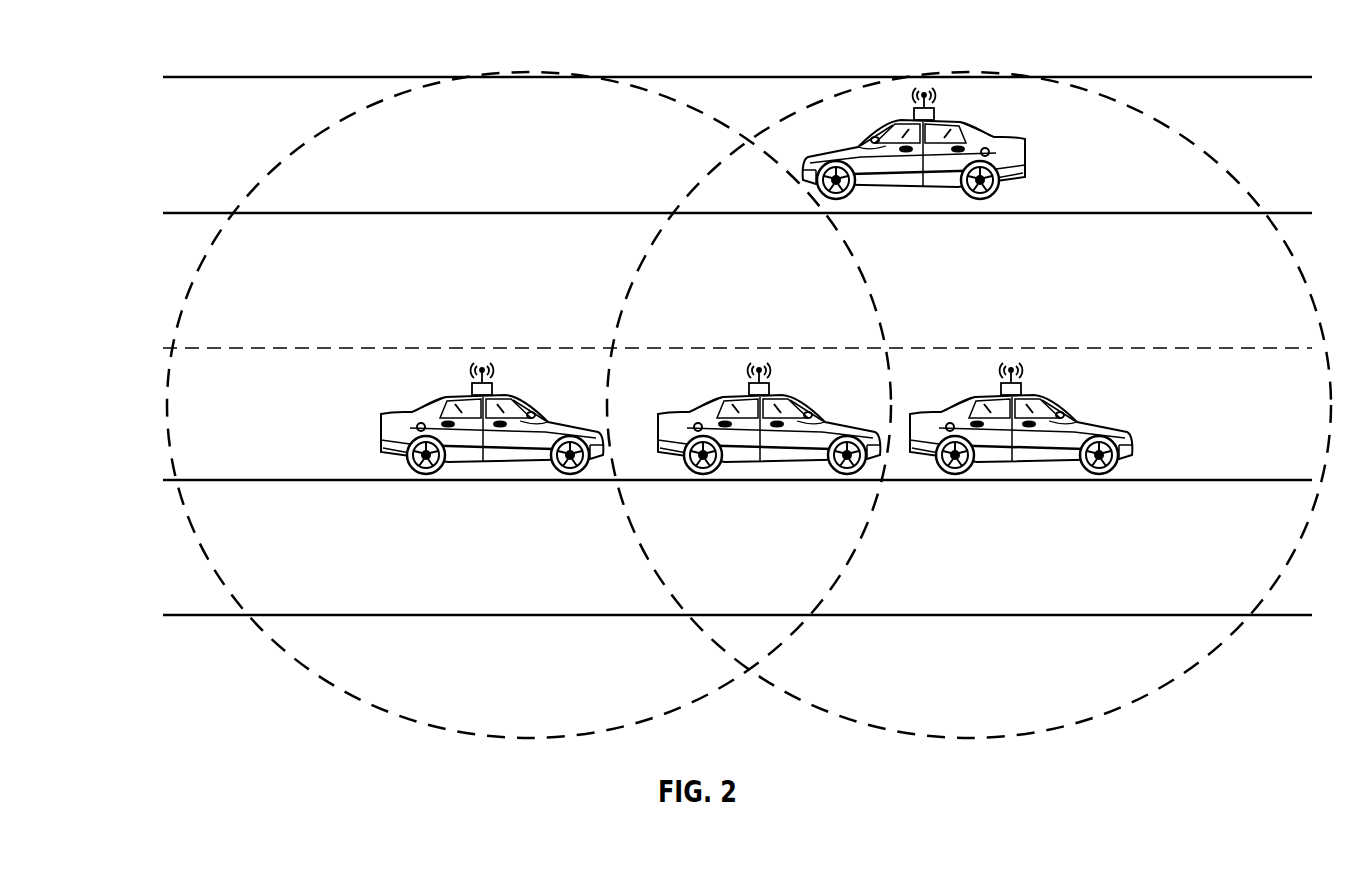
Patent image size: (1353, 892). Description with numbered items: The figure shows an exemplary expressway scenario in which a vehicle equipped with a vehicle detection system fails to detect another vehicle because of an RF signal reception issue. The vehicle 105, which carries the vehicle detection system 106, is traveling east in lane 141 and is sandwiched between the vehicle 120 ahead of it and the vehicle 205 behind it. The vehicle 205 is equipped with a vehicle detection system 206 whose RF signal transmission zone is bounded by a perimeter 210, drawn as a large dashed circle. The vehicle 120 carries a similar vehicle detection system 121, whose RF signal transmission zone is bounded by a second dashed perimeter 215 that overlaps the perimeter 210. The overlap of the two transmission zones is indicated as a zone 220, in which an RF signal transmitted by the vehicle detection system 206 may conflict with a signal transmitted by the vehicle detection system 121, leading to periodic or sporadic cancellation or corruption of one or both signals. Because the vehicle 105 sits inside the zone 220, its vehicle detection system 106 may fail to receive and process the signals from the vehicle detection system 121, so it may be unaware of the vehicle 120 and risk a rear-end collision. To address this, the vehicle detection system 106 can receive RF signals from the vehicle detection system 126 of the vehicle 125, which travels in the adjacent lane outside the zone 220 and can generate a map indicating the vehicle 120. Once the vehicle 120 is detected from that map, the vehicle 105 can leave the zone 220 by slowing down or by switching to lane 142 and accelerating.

The vehicle 105 is at (693, 396).
The vehicle detection system 106 is at (770, 386).
The vehicle 120 is at (1067, 403).
The vehicle detection system 121 is at (1014, 384).
The vehicle 125 is at (1015, 130).
The vehicle detection system 126 is at (946, 110).
The lane 141 is at (157, 426).
The lane 142 is at (188, 577).
The vehicle 205 is at (416, 396).
The vehicle detection system 206 is at (493, 386).
The perimeter 210 is at (302, 138).
The perimeter 215 is at (1186, 131).
The zone 220 is at (785, 285).